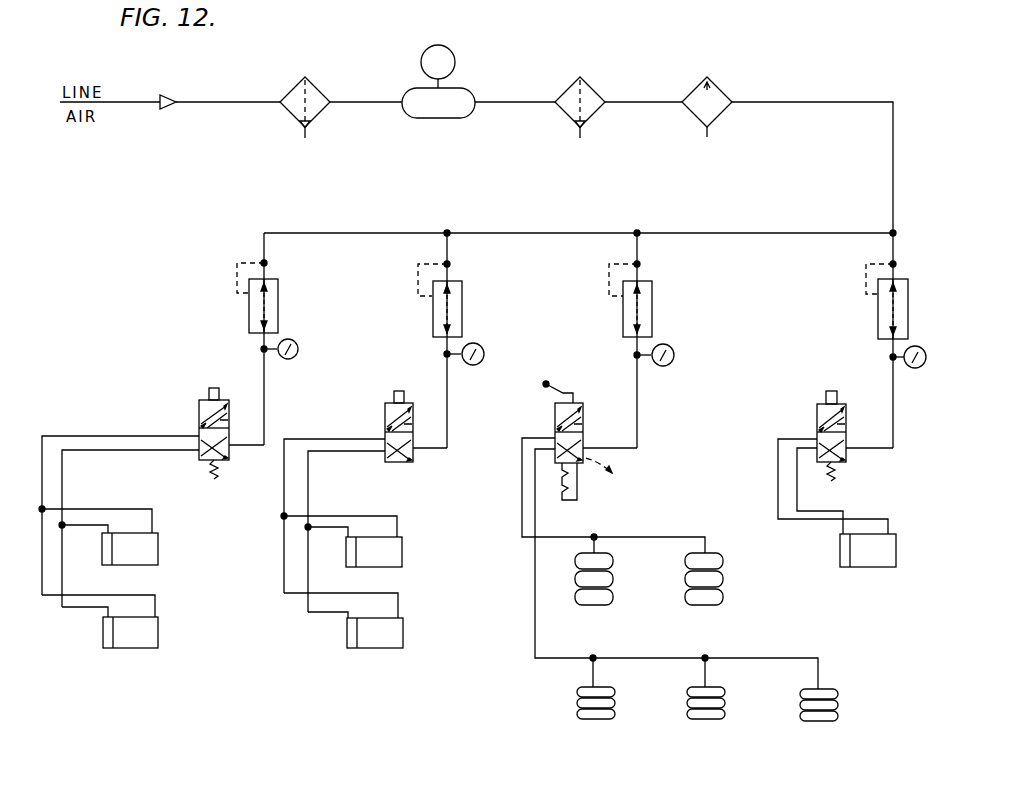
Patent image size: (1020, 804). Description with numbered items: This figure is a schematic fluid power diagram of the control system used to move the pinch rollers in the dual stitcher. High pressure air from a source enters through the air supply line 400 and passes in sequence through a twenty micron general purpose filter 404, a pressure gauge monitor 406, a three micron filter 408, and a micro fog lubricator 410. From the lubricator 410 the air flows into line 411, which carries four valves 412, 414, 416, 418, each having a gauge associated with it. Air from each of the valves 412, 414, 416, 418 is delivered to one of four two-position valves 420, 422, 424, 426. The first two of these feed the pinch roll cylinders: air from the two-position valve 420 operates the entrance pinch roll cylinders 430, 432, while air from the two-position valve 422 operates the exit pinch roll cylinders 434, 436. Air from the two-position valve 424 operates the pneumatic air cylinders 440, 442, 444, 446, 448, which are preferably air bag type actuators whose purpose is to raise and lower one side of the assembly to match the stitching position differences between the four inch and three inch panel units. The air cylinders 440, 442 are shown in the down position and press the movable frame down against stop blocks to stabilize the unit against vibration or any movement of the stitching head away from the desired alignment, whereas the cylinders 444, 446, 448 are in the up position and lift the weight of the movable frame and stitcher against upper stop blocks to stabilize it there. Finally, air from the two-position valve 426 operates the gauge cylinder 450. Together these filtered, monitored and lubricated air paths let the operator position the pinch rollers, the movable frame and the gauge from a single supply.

The air supply line 400 is at (212, 103).
The 20 micron general purpose filter 404 is at (318, 85).
The pressure gauge monitor 406 is at (447, 110).
The three micron filter 408 is at (595, 90).
The micro fog lubricator 410 is at (715, 88).
The line 411 is at (798, 102).
The valve 412 is at (277, 300).
The valve 414 is at (461, 302).
The valve 416 is at (650, 302).
The valve 418 is at (881, 304).
The two-position valve 420 is at (200, 406).
The two-position valve 422 is at (386, 406).
The two-position valve 424 is at (583, 413).
The two-position valve 426 is at (818, 412).
The entrance pinch roll cylinder 430 is at (155, 551).
The entrance pinch roll cylinder 432 is at (153, 633).
The exit pinch roll cylinder 434 is at (397, 550).
The exit pinch roll cylinder 436 is at (397, 633).
The pneumatic air cylinder 440 is at (583, 605).
The pneumatic air cylinder 442 is at (705, 605).
The pneumatic air cylinder 444 is at (587, 719).
The pneumatic air cylinder 446 is at (692, 722).
The pneumatic air cylinder 448 is at (806, 721).
The gauge cylinder 450 is at (883, 565).